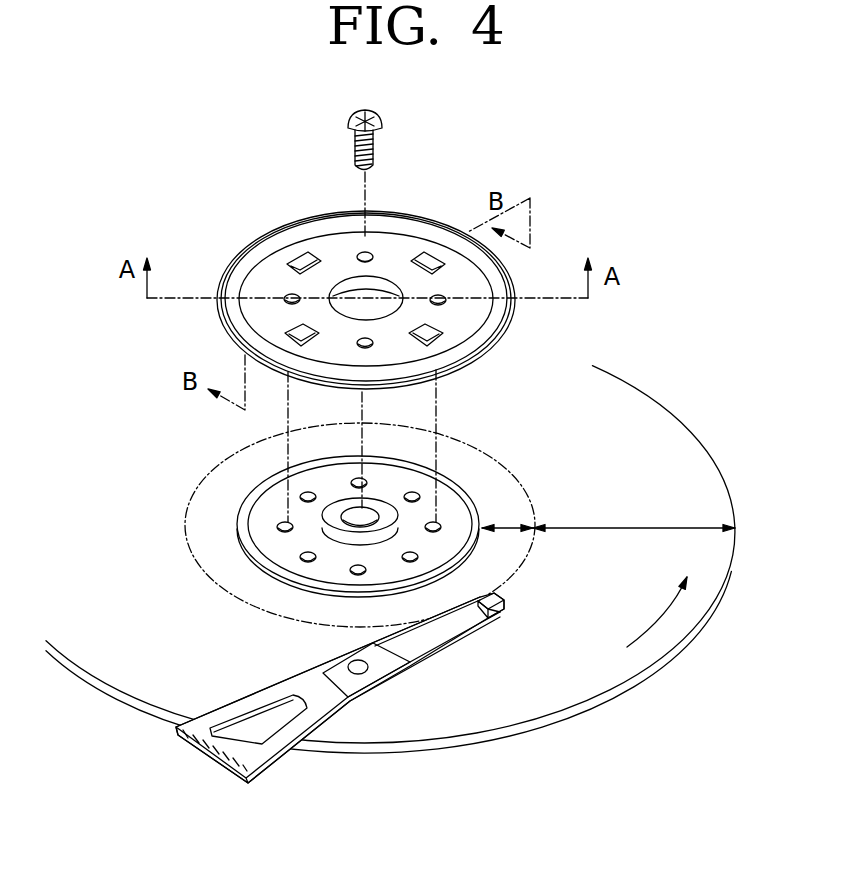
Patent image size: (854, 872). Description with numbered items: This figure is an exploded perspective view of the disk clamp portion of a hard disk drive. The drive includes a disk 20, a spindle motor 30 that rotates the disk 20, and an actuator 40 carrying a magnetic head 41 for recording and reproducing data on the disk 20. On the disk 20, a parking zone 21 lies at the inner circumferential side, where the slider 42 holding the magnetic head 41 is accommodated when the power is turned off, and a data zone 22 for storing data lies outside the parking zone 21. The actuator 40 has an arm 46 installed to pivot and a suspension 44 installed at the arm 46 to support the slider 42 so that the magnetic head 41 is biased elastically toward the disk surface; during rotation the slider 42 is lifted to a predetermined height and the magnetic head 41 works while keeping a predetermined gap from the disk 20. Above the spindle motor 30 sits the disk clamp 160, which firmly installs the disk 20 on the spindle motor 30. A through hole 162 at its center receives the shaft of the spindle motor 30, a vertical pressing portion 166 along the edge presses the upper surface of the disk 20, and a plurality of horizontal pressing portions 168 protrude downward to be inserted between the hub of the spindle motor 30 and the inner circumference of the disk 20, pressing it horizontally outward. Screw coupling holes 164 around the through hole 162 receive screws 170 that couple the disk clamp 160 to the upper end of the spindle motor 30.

The screw 170 is at (386, 124).
The screw coupling hole 164 is at (359, 253).
The horizontal pressing portion 168 is at (298, 255).
The disk clamp 160 is at (511, 270).
The through hole 162 is at (287, 304).
The vertical pressing portion 166 is at (492, 312).
The spindle motor 30 is at (283, 545).
The parking zone 21 is at (512, 528).
The data zone 22 is at (624, 528).
The disk 20 is at (533, 697).
The actuator 40 is at (372, 725).
The magnetic head 41 is at (500, 614).
The slider 42 is at (486, 616).
The suspension 44 is at (407, 648).
The arm 46 is at (271, 694).